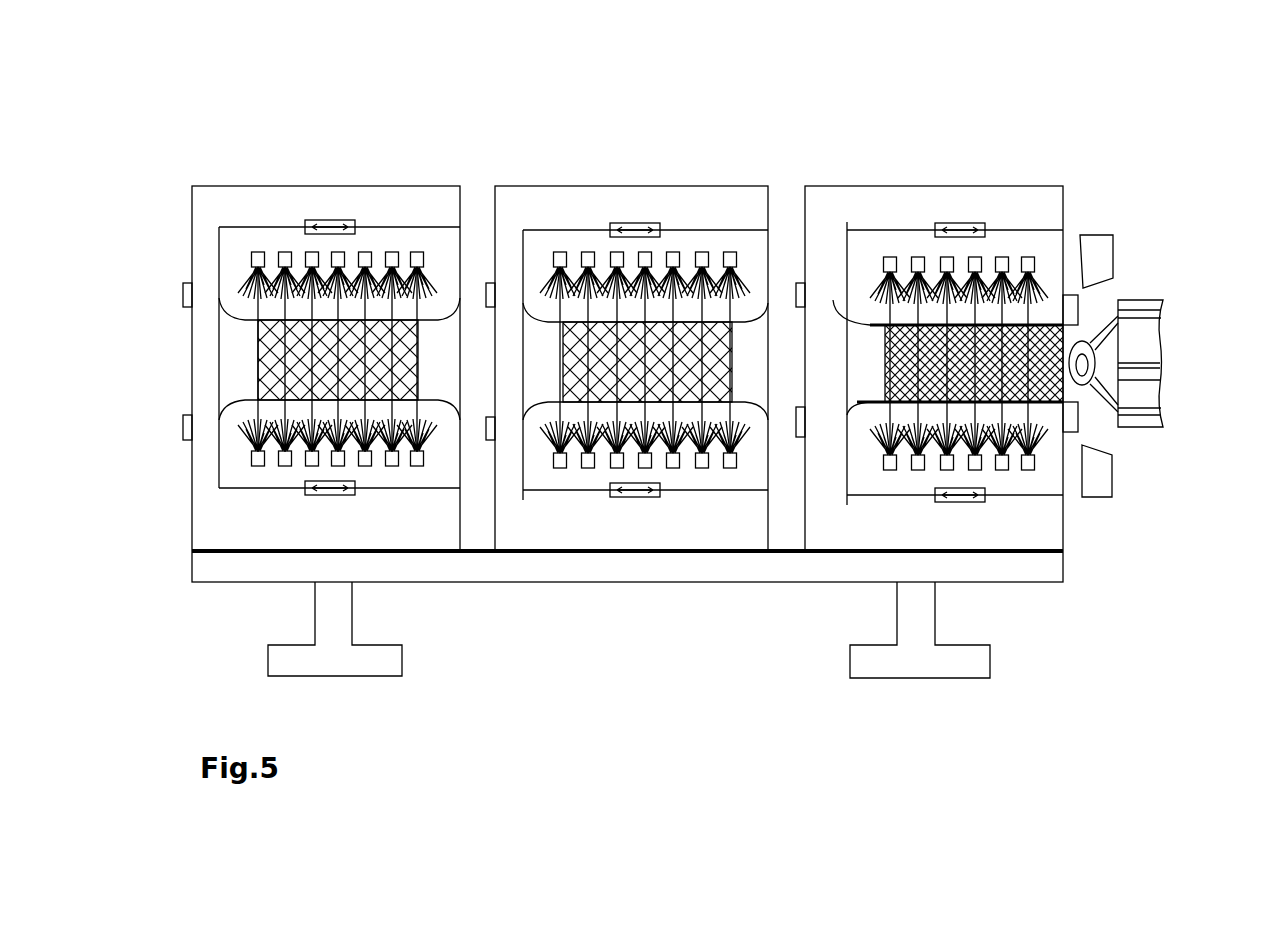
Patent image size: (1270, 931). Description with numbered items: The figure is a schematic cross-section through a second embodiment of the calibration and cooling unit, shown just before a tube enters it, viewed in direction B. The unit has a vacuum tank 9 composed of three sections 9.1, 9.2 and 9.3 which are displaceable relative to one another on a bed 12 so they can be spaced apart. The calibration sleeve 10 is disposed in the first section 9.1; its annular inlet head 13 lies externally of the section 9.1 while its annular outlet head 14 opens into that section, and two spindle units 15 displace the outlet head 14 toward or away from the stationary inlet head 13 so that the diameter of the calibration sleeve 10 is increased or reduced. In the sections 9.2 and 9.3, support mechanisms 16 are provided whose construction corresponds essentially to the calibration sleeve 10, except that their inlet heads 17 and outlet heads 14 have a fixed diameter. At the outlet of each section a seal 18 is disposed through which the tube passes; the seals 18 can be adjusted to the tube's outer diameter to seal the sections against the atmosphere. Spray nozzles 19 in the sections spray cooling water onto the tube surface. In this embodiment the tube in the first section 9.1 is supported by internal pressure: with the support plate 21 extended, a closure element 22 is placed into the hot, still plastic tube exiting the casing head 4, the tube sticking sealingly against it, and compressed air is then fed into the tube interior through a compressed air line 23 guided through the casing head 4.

The casing head 4 is at (1163, 300).
The vacuum tank 9 is at (1063, 540).
The first section 9.1 is at (935, 186).
The second section 9.2 is at (645, 186).
The third section 9.3 is at (345, 186).
The calibration sleeve 10 is at (1018, 472).
The bed 12 is at (706, 572).
The inlet head 13 is at (1079, 307).
The outlet head 14 is at (219, 330).
The spindle units 15 is at (395, 227).
The support mechanisms 16 is at (404, 467).
The inlet heads 17 is at (474, 300).
The seal 18 is at (187, 440).
The spray nozzles 19 is at (286, 252).
The support plate 21 is at (1106, 484).
The closure element 22 is at (1093, 380).
The compressed air line 23 is at (1163, 364).
The viewing direction B is at (1140, 137).